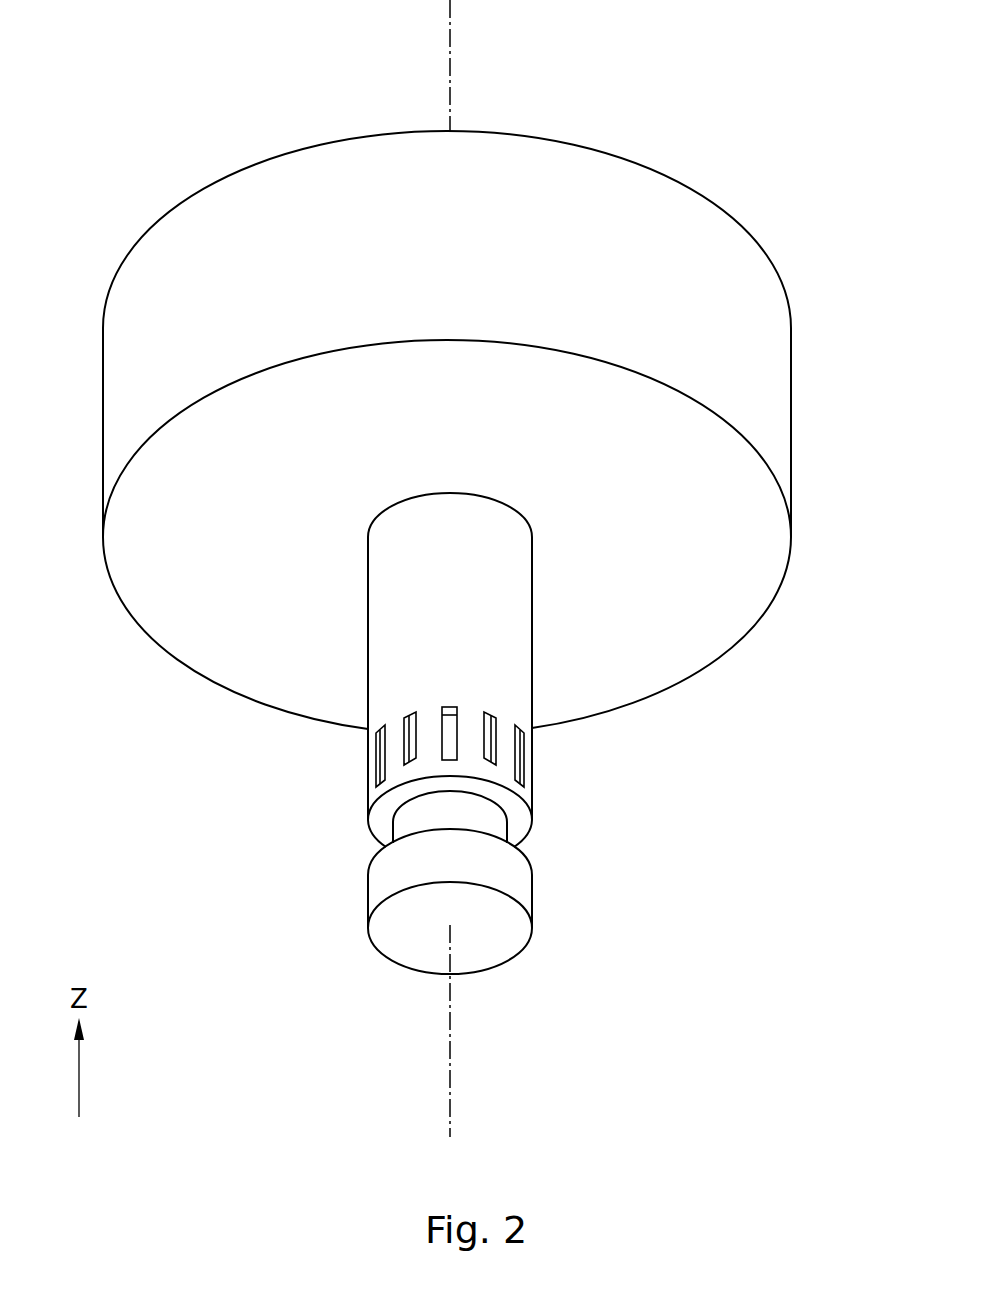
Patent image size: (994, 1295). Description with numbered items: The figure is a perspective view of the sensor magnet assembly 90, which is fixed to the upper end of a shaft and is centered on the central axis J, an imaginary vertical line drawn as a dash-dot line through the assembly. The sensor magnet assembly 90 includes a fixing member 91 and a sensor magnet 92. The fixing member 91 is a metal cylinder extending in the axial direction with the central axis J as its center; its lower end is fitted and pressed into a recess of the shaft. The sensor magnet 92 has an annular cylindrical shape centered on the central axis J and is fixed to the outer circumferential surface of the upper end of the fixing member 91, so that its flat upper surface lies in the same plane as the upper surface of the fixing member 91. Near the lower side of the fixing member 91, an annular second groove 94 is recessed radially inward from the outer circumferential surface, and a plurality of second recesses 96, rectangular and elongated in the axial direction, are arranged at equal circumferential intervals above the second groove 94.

The sensor magnet assembly 90 is at (768, 91).
The sensor magnet 92 is at (707, 227).
The fixing member 91 is at (502, 682).
The second groove 94 is at (522, 852).
The second recesses 96 is at (449, 754).
The central axis J is at (450, 50).